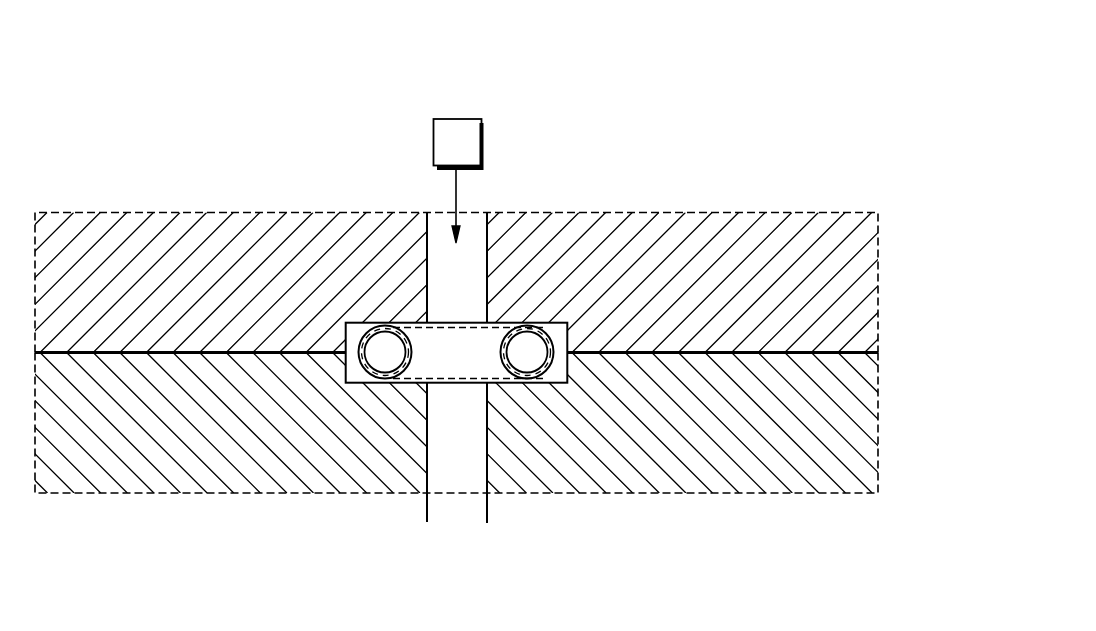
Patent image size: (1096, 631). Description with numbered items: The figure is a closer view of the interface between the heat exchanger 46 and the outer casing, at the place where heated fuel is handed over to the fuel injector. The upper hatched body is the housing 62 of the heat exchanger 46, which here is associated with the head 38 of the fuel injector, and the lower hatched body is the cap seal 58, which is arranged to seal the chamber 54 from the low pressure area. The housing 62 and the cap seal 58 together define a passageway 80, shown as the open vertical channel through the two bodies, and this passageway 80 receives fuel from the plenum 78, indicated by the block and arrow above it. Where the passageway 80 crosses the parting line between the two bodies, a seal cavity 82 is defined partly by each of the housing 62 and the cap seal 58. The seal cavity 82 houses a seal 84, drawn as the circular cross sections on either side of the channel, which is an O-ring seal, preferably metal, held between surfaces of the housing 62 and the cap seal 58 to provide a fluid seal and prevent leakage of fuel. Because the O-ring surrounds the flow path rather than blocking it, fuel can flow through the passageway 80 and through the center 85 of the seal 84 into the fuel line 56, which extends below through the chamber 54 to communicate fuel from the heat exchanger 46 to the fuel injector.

The heat exchanger 46 is at (710, 73).
The fuel plenum 78 is at (482, 140).
The passageway 80 is at (435, 255).
The seal cavity 82 is at (558, 330).
The seal 84 is at (345, 337).
The center of the seal 85 is at (421, 357).
The housing 62 is at (515, 253).
The head 38 is at (667, 220).
The cap seal 58 is at (862, 413).
The chamber 54 is at (200, 536).
The fuel line 56 is at (488, 508).